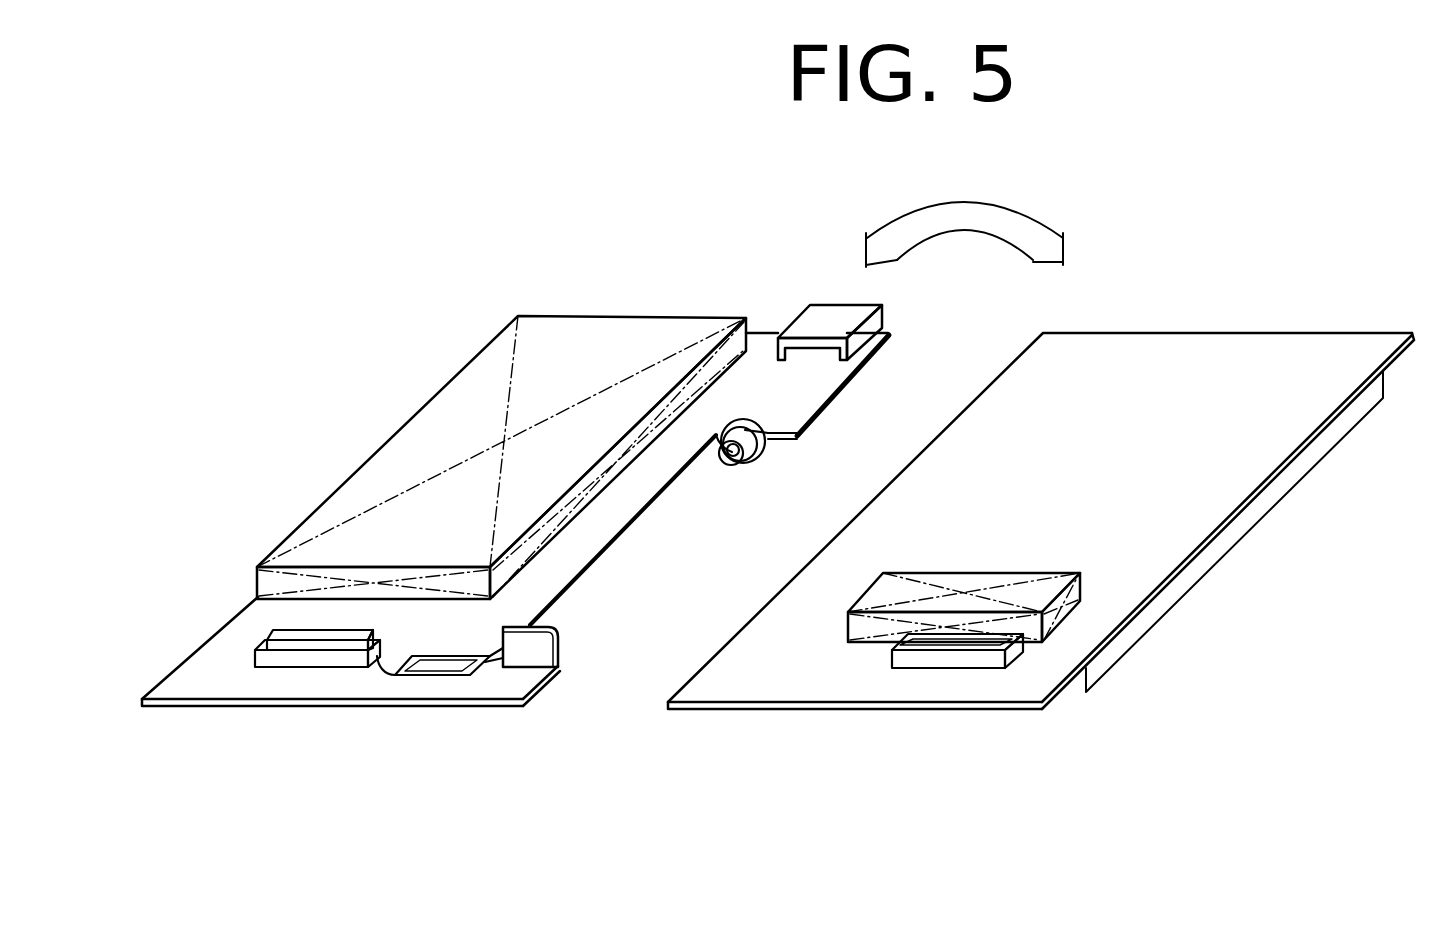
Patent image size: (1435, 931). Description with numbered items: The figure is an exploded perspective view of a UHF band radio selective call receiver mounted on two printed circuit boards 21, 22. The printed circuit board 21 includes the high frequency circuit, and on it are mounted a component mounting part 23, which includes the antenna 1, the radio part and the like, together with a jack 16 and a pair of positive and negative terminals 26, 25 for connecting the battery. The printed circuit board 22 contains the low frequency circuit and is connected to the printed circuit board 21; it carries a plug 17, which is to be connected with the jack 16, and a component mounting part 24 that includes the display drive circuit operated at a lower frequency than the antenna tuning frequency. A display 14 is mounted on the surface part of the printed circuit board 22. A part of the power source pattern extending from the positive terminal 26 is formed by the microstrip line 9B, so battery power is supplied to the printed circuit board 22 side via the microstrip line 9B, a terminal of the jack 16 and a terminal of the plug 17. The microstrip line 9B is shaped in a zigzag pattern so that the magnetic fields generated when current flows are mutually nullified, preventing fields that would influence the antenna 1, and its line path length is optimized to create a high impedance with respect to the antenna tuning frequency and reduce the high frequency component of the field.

The antenna 1 is at (815, 318).
The component mounting part 23 is at (415, 435).
The printed circuit board 21 is at (200, 685).
The jack 16 is at (303, 665).
The microstrip line 9B is at (440, 677).
The positive terminal 26 is at (560, 631).
The negative terminal 25 is at (745, 473).
The printed circuit board 22 is at (1248, 355).
The display 14 is at (1297, 475).
The component mounting part 24 is at (1043, 572).
The plug 17 is at (970, 665).